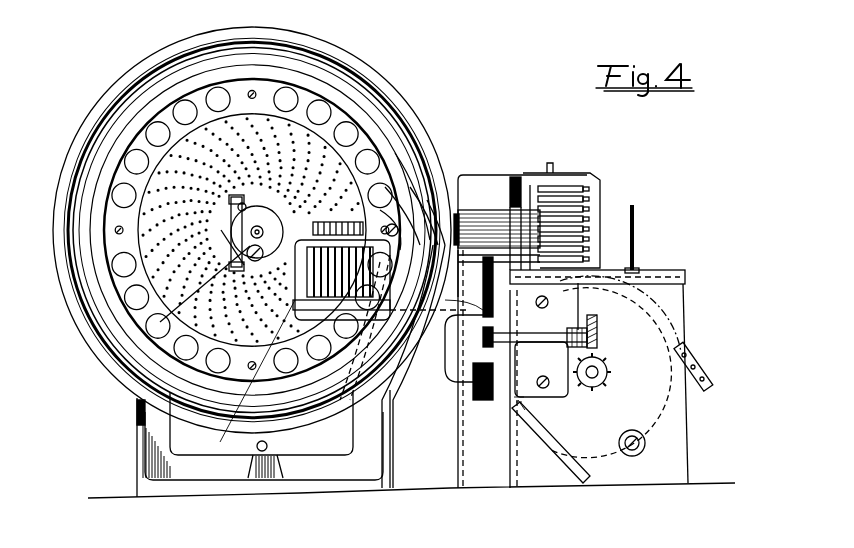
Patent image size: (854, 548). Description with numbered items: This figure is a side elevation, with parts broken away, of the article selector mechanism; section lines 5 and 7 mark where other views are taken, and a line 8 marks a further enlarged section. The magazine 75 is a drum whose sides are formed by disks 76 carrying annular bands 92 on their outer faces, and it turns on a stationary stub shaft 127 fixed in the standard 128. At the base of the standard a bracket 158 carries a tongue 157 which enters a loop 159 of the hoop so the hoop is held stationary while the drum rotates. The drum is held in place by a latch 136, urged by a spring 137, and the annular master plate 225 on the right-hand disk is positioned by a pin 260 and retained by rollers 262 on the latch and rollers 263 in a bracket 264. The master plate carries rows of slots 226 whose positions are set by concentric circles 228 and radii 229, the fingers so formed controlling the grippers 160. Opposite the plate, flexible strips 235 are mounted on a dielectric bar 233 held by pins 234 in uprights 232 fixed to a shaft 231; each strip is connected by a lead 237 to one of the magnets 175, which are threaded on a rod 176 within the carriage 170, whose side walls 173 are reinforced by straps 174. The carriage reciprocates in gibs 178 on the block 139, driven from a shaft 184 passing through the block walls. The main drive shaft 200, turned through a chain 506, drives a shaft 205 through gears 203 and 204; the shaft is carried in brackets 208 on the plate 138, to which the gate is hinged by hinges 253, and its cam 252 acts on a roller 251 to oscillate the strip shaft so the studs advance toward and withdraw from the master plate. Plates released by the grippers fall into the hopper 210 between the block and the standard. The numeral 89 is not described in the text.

The section line 7— 7 is at (263, 536).
The section line 5— 5 is at (707, 223).
The section line 8— 8 is at (324, 205).
The magazine 75 is at (80, 252).
The outer flange 89 is at (298, 34).
The disk 76 is at (343, 72).
The annular band 92 is at (347, 93).
The master plate 225 is at (353, 118).
The slots 226 is at (183, 147).
The radii 229 is at (115, 183).
The circles 228 is at (135, 282).
The flexible strips 235 is at (395, 153).
The rollers 263 is at (385, 187).
The bracket 264 is at (410, 187).
The uprights 232 is at (427, 200).
The grippers 160 is at (487, 210).
The carriage 170 is at (523, 178).
The side walls 173 is at (550, 190).
The rod 176 is at (578, 193).
The magnets 175 is at (580, 213).
The hinges 253 is at (580, 228).
The straps 174 is at (578, 250).
The gibs 178 is at (655, 274).
The latch 136 is at (245, 207).
The spring 137 is at (262, 215).
The pin 260 is at (380, 265).
The rollers 262 is at (205, 266).
The stub shaft 127 is at (255, 261).
The roller 251 is at (487, 300).
The gear 204 is at (597, 326).
The shaft 205 is at (541, 346).
The gear 203 is at (607, 365).
The main drive shaft 200 is at (608, 374).
The chain 506 is at (703, 369).
The cam 252 is at (456, 341).
The plate 138 is at (522, 403).
The brackets 208 is at (570, 385).
The block 139 is at (635, 418).
The shaft 184 is at (645, 438).
The hopper 210 is at (487, 369).
The bar 233 is at (394, 398).
The shaft 231 is at (390, 412).
The pins 234 is at (261, 377).
The tongue 157 is at (270, 446).
The lead 237 is at (333, 445).
The loop 159 is at (254, 446).
The bracket 158 is at (278, 470).
The standard 128 is at (340, 488).